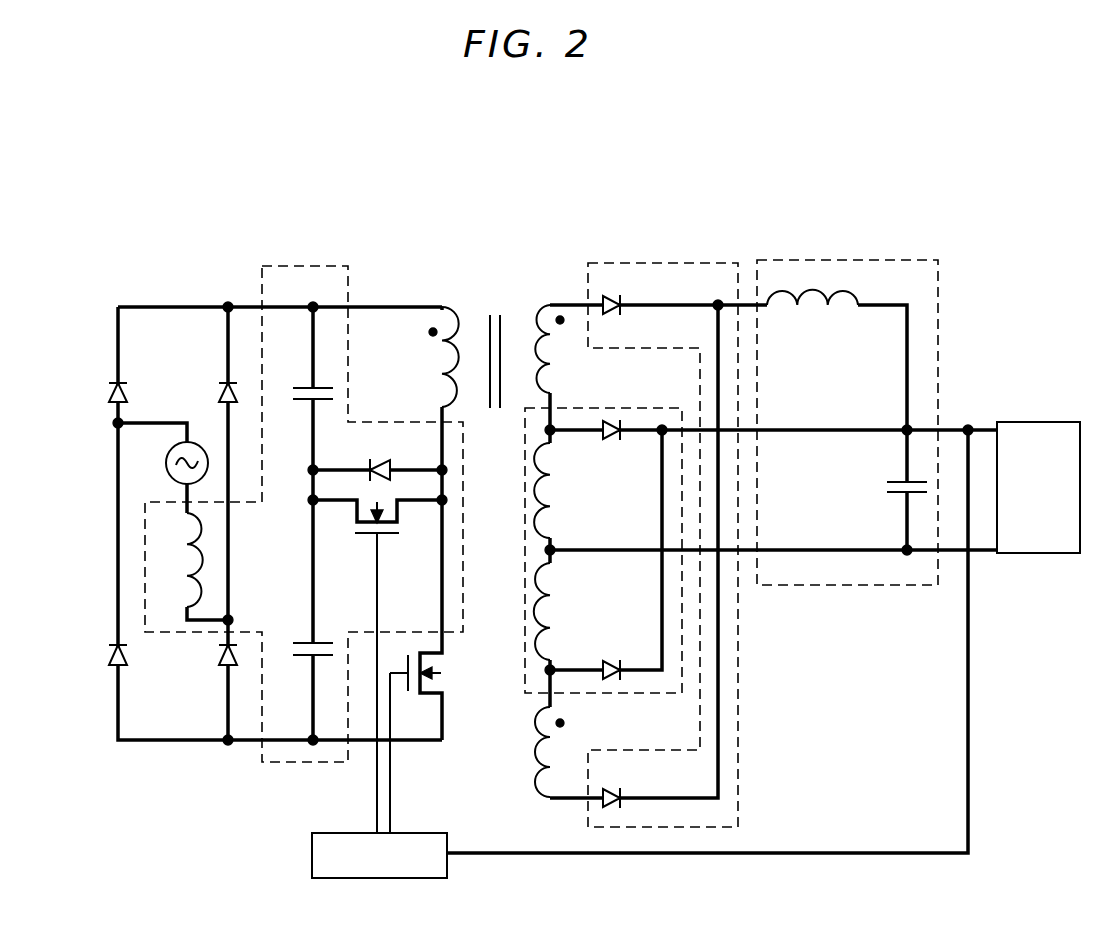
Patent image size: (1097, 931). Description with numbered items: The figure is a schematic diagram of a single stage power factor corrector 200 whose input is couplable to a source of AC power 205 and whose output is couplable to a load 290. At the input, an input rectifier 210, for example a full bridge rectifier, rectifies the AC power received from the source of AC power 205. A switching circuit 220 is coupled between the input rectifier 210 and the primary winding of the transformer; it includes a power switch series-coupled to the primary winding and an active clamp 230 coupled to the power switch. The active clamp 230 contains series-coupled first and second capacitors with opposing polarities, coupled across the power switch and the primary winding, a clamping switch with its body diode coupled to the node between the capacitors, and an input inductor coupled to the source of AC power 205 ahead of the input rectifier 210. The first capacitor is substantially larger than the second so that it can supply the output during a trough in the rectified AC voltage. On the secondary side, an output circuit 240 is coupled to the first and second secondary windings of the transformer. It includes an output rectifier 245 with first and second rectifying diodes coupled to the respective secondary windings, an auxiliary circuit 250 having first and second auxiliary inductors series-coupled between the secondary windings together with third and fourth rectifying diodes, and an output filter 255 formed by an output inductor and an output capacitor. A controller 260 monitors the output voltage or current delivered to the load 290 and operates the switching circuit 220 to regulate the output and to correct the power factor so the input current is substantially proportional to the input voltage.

The single stage power factor corrector 200 is at (356, 134).
The source of AC power 205 is at (165, 463).
The input rectifier 210 is at (275, 222).
The switching circuit 220 is at (442, 222).
The active clamp 230 is at (302, 263).
The output circuit 240 is at (933, 222).
The output rectifier 245 is at (648, 263).
The auxiliary circuit 250 is at (610, 406).
The output filter 255 is at (845, 259).
The controller 260 is at (312, 856).
The load 290 is at (1040, 421).